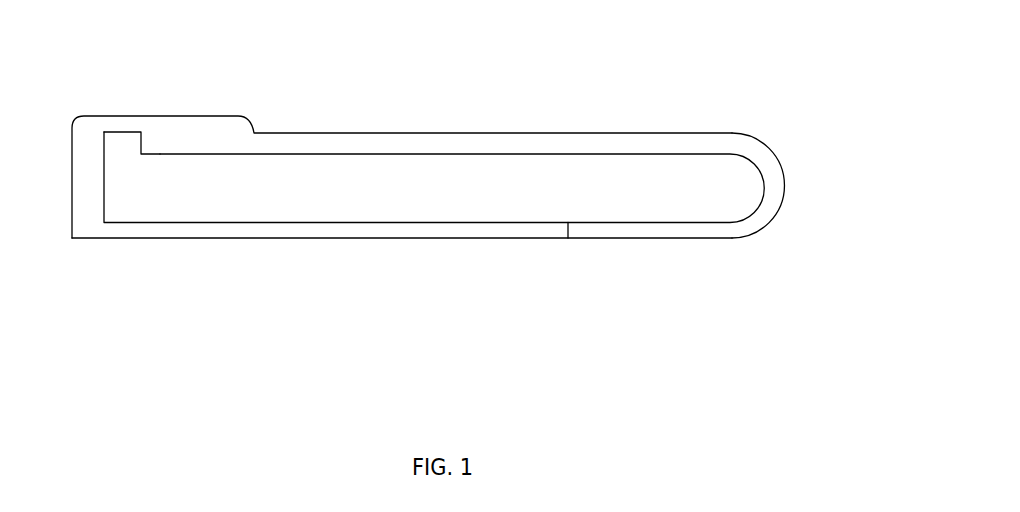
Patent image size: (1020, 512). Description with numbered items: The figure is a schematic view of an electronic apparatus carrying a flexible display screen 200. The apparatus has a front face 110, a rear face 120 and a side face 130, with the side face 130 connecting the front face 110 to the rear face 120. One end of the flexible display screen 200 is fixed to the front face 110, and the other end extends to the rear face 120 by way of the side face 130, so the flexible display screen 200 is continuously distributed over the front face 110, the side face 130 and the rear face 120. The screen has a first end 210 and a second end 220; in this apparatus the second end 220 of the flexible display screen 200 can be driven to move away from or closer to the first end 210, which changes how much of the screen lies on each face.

The front face 110 is at (292, 98).
The rear face 120 is at (410, 265).
The side face 130 is at (813, 182).
The flexible display screen 200 is at (548, 133).
The first end 210 is at (195, 143).
The second end 220 is at (591, 238).